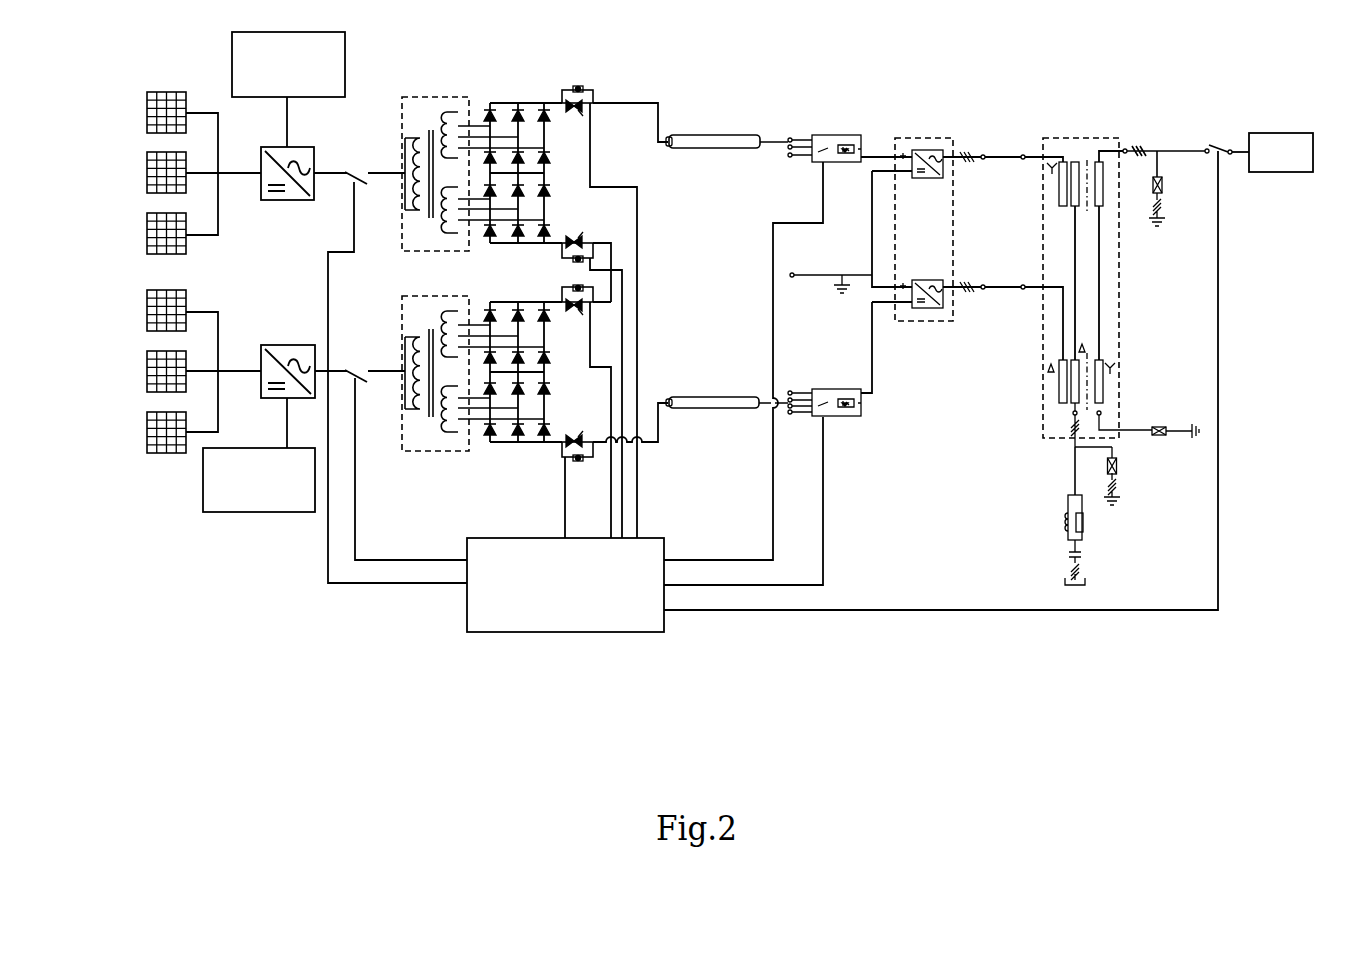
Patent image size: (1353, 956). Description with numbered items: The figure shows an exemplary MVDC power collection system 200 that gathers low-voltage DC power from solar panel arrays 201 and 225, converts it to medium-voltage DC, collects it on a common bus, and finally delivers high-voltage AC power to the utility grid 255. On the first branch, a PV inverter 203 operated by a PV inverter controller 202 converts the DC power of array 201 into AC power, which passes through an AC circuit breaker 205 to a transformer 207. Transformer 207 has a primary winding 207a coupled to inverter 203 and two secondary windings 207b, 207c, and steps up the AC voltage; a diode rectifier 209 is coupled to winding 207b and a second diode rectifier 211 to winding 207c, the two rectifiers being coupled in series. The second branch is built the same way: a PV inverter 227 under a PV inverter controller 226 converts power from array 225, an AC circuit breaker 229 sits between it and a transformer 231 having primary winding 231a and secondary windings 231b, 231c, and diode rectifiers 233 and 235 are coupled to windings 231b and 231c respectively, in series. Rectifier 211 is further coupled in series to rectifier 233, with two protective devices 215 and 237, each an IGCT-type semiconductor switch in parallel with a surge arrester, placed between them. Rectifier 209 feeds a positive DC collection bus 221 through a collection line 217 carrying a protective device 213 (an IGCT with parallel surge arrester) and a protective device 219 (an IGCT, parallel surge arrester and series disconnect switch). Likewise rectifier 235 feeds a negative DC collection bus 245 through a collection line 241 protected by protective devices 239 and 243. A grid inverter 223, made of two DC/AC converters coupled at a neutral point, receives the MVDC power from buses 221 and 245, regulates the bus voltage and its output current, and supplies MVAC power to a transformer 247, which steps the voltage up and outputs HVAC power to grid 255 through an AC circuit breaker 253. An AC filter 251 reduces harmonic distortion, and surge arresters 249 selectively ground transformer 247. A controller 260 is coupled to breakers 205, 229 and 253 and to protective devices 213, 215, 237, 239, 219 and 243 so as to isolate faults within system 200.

The MVDC power collection system 200 is at (290, 572).
The solar panel array 201 is at (134, 179).
The PV inverter controller 202 is at (288, 89).
The PV inverter 203 is at (275, 200).
The AC circuit breaker 205 is at (362, 182).
The transformer 207 is at (445, 166).
The primary winding 207a is at (414, 140).
The secondary winding 207b is at (448, 112).
The secondary winding 207c is at (458, 251).
The diode rectifier 209 is at (502, 102).
The diode rectifier 211 is at (543, 248).
The protective device 213 is at (576, 107).
The protective device 215 is at (576, 240).
The collection line 217 is at (682, 134).
The protective device 219 is at (826, 134).
The positive DC collection bus 221 is at (872, 152).
The grid inverter 223 is at (938, 136).
The solar panel array 225 is at (134, 369).
The PV inverter controller 226 is at (259, 455).
The PV inverter 227 is at (274, 345).
The AC circuit breaker 229 is at (357, 378).
The transformer 231 is at (445, 388).
The primary winding 231a is at (414, 338).
The secondary winding 231b is at (441, 311).
The secondary winding 231c is at (460, 434).
The diode rectifier 233 is at (502, 300).
The diode rectifier 235 is at (531, 445).
The protective device 237 is at (576, 308).
The protective device 239 is at (576, 440).
The collection line 241 is at (682, 397).
The protective device 243 is at (826, 388).
The negative DC collection bus 245 is at (874, 343).
The transformer 247 is at (1052, 138).
The surge arresters 249 is at (1164, 196).
The AC filter 251 is at (1083, 524).
The AC circuit breaker 253 is at (1226, 146).
The grid 255 is at (1300, 133).
The controller 260 is at (565, 585).